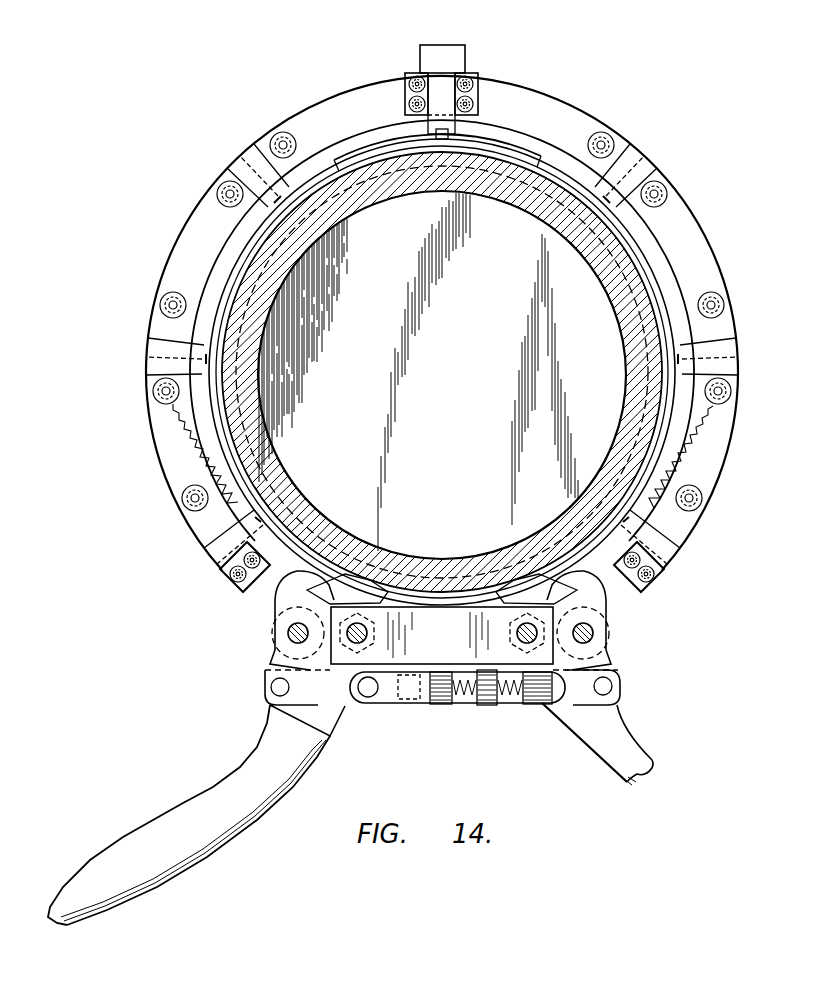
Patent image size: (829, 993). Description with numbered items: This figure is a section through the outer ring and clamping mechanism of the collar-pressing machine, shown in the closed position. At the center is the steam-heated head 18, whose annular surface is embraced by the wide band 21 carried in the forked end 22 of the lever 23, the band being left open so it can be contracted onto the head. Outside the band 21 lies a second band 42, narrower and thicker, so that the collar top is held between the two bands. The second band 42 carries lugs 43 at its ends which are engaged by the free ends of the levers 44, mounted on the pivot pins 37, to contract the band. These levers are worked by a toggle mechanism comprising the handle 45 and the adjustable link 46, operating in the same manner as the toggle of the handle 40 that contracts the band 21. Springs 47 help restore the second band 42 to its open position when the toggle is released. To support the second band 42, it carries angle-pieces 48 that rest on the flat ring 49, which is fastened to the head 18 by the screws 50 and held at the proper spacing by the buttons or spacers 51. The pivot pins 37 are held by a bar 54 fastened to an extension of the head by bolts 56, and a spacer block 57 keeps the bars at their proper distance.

The head 18 is at (407, 180).
The band 21 is at (337, 487).
The forked end 22 is at (522, 133).
The lever 23 is at (438, 47).
The pivot pins 37 is at (289, 634).
The handle 40 is at (641, 752).
The second band 42 is at (237, 260).
The lugs 43 is at (294, 588).
The levers 44 is at (281, 602).
The handle 45 is at (152, 820).
The adjustable link 46 is at (500, 698).
The springs 47 is at (211, 458).
The angle-pieces 48 is at (448, 84).
The flat ring 49 is at (188, 227).
The screws 50 is at (229, 192).
The buttons or spacers 51 is at (615, 146).
The bar 54 is at (531, 700).
The bolts 56 is at (353, 642).
The spacer block 57 is at (442, 635).